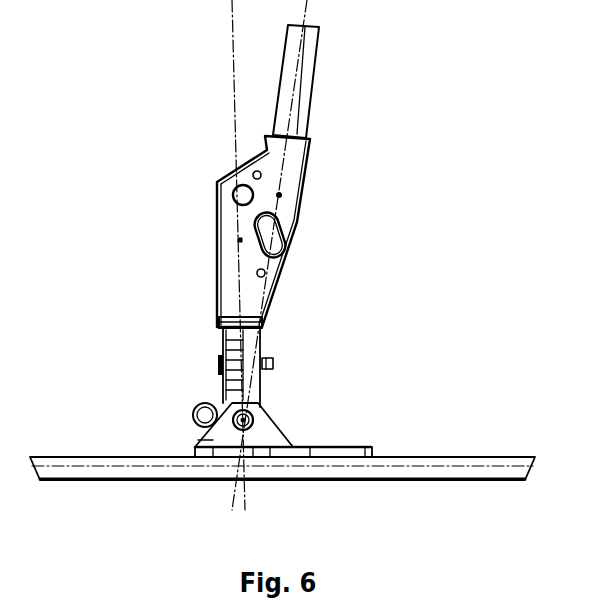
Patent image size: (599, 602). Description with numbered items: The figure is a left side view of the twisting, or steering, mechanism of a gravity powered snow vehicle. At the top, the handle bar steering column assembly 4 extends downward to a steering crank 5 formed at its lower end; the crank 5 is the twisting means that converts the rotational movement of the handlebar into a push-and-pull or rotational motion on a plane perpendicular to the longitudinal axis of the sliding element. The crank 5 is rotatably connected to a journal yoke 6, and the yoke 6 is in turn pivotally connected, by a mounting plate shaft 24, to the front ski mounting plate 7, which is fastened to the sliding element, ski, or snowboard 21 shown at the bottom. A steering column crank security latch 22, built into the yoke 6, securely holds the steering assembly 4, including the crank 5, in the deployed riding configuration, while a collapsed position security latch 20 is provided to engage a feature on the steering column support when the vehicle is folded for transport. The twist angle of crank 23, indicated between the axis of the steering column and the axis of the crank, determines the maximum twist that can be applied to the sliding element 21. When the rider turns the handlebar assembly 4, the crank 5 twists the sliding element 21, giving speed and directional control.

The handle bar steering column assembly 4 is at (310, 95).
The steering crank 5 is at (226, 231).
The journal yoke 6 is at (285, 327).
The front ski mounting plate 7 is at (195, 440).
The collapsed position security latch 20 is at (198, 400).
The sliding element, ski, or snowboard 21 is at (412, 457).
The steering column crank security latch 22 is at (274, 362).
The twist angle of crank 23 is at (293, 65).
The mounting plate shaft 24 is at (255, 419).